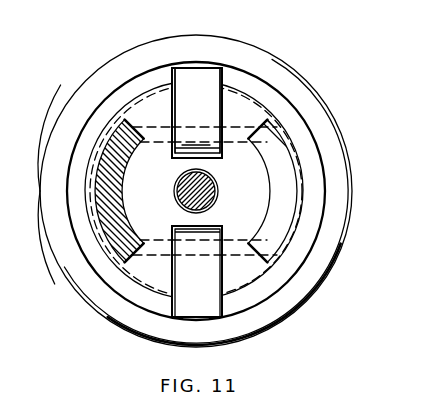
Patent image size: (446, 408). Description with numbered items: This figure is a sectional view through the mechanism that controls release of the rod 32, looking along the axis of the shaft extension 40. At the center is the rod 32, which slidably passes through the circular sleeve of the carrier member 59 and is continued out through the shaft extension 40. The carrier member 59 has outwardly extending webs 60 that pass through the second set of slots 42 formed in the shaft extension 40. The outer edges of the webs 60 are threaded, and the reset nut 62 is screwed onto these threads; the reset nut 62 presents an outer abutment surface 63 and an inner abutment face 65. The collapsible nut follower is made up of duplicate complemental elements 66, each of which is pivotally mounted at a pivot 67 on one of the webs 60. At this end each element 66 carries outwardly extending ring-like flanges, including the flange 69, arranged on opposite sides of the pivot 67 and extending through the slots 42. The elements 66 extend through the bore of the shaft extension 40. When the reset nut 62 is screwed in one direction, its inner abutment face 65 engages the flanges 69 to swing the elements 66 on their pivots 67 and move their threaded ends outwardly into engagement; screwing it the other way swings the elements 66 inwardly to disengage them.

The rod 32 is at (178, 197).
The shaft extension 40 is at (325, 200).
The second set of slots 42 is at (276, 128).
The carrier member 59 is at (188, 164).
The webs 60 is at (236, 100).
The reset nut 62 is at (112, 60).
The outer abutment surface 63 is at (76, 106).
The inner abutment face 65 is at (153, 77).
The complemental elements 66 is at (183, 117).
The pivot 67 is at (237, 143).
The ring-like flange 69 is at (210, 93).